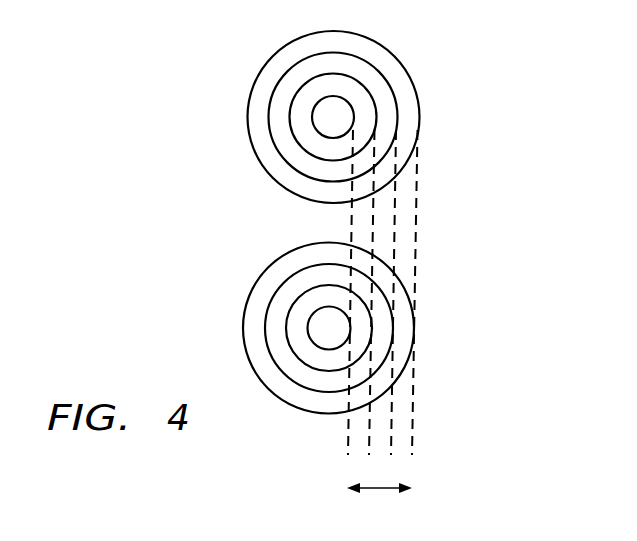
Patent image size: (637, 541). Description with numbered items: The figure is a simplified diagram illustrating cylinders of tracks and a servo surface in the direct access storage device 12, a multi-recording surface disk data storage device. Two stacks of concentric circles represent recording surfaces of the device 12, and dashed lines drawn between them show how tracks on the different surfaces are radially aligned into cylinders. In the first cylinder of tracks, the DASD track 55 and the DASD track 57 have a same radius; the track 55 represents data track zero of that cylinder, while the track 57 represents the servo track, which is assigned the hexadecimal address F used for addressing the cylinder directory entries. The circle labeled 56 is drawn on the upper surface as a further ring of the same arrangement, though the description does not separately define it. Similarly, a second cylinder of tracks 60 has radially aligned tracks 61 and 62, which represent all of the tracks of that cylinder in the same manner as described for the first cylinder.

The direct access storage device (DASD) 12 is at (248, 213).
The data track 0 55 is at (418, 202).
The first tube outer wall 56 is at (418, 92).
The servo track 57 is at (400, 374).
The second cylinder of tracks 60 is at (397, 232).
The track of second cylinder 61 is at (373, 62).
The track of second cylinder 62 is at (395, 328).